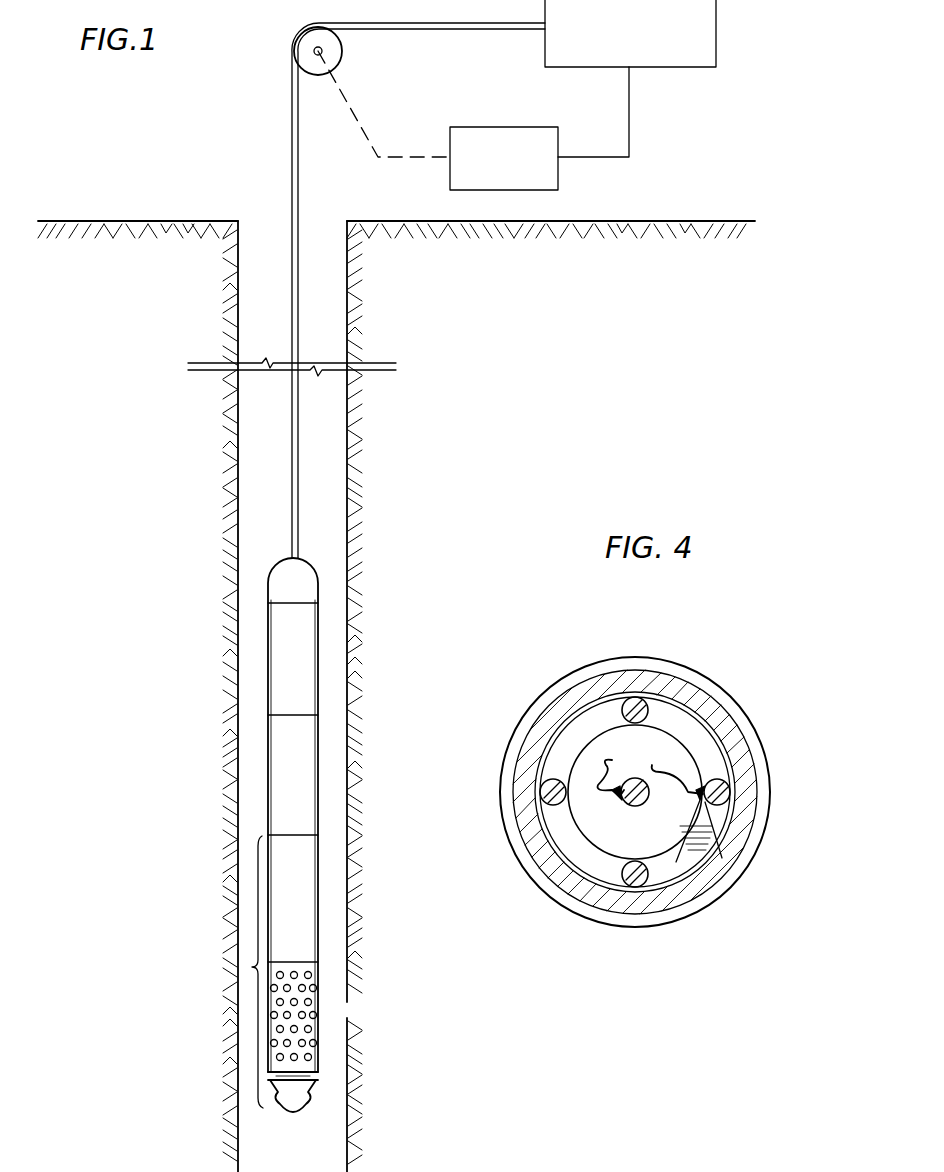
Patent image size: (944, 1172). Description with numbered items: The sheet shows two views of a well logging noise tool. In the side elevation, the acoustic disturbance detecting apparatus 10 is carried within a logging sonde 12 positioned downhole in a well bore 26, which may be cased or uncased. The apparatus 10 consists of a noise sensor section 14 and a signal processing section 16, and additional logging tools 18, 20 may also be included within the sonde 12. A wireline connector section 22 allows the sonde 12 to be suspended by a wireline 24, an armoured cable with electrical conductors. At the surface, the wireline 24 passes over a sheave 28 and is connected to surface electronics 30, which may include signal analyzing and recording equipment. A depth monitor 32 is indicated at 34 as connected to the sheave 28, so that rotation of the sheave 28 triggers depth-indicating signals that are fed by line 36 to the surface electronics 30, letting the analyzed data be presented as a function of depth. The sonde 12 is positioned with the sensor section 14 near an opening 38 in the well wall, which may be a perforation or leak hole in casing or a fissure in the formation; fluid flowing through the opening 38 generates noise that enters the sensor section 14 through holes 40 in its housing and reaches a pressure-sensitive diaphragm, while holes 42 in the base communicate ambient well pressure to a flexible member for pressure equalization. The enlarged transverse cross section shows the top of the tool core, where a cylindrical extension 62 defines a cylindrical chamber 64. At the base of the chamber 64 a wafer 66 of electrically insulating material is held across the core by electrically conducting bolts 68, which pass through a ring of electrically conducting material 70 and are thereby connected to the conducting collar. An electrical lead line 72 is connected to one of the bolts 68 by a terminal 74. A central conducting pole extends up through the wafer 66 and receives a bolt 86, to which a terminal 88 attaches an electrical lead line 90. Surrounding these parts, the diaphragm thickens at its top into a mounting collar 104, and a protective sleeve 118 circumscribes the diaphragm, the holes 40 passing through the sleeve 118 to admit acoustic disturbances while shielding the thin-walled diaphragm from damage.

In FIG. 1, the acoustic disturbance detecting apparatus 10 is at (252, 967).
In FIG. 1, the logging sonde 12 is at (205, 652).
In FIG. 1, the noise sensor section 14 is at (310, 1066).
In FIG. 1, the signal processing section 16 is at (305, 898).
In FIG. 1, the additional logging tool 18 is at (302, 758).
In FIG. 1, the additional logging tool 20 is at (305, 660).
In FIG. 1, the wireline connector section 22 is at (306, 578).
In FIG. 1, the wireline 24 is at (291, 175).
In FIG. 1, the well bore 26 is at (347, 448).
In FIG. 1, the sheave 28 is at (343, 50).
In FIG. 1, the surface electronics 30 is at (705, 67).
In FIG. 1, the depth monitor 32 is at (560, 180).
In FIG. 1, the connection of depth monitor to sheave 34 is at (362, 134).
In FIG. 1, the line 36 is at (631, 136).
In FIG. 1, the opening 38 is at (350, 1012).
In FIG. 1, the holes 40 is at (305, 988).
In FIG. 1, the holes 42 is at (310, 1095).
In FIG. 4, the cylindrical extension 62 is at (676, 862).
In FIG. 4, the cylindrical chamber 64 is at (700, 718).
In FIG. 4, the wafer 66 is at (617, 850).
In FIG. 4, the bolts 68 is at (653, 706).
In FIG. 4, the ring of electrically conducting material 70 is at (712, 752).
In FIG. 4, the electrical lead line 72 is at (690, 802).
In FIG. 4, the terminal 74 is at (722, 832).
In FIG. 4, the bolt 86 is at (633, 778).
In FIG. 4, the terminal 88 is at (617, 804).
In FIG. 4, the electrical lead line 90 is at (606, 775).
In FIG. 4, the mounting collar 104 is at (757, 806).
In FIG. 4, the sleeve 118 is at (587, 666).